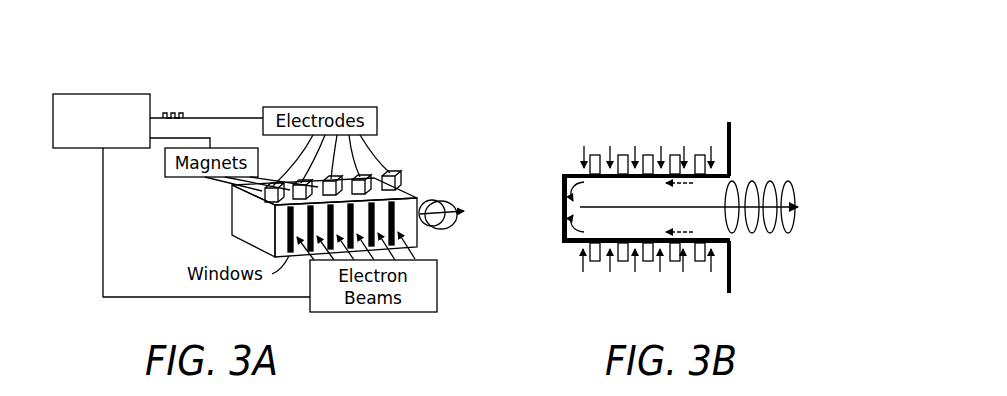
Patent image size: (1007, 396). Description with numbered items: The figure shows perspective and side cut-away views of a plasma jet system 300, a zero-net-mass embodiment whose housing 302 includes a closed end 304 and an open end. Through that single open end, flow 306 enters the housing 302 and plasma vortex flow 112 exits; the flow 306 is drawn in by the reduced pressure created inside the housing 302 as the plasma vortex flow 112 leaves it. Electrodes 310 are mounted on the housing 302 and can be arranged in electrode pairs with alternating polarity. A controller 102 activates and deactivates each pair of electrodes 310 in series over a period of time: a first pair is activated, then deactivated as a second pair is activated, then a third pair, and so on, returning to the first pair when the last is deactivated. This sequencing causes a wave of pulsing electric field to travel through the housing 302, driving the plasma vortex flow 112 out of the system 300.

In FIG. 3A, the plasma jet system 300 is at (126, 52).
In FIG. 3B, the plasma jet system 300 is at (606, 96).
In FIG. 3A, the controller 102 is at (124, 95).
In FIG. 3A, the housing 302 is at (375, 178).
In FIG. 3B, the housing 302 is at (577, 174).
In FIG. 3A, the closed end 304 is at (240, 223).
In FIG. 3B, the closed end 304 is at (565, 218).
In FIG. 3A, the electrodes 310 is at (353, 176).
In FIG. 3B, the flow 306 is at (740, 257).
In FIG. 3A, the plasma vortex flow 112 is at (443, 200).
In FIG. 3B, the plasma vortex flow 112 is at (766, 180).